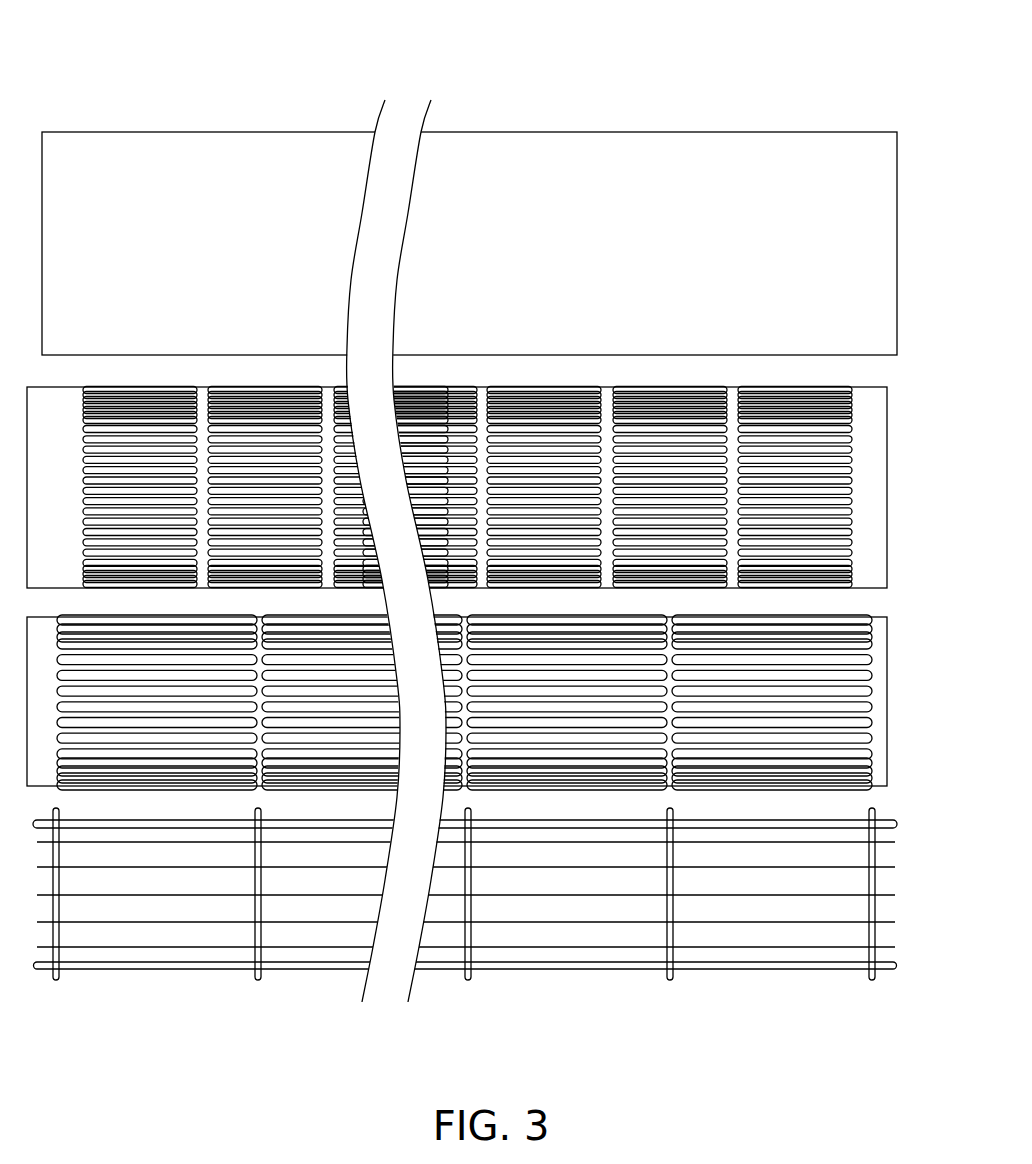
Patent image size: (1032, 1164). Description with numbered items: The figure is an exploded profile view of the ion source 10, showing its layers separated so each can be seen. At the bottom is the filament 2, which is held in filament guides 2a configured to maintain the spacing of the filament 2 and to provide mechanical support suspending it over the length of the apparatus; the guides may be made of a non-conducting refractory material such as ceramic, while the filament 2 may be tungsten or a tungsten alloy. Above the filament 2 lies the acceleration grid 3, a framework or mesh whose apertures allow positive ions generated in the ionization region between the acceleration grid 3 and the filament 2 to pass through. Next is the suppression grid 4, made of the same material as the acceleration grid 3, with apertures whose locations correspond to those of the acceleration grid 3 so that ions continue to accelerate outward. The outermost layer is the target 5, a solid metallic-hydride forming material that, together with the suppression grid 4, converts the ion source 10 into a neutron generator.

The ion source 10 is at (265, 43).
The target 5 is at (809, 157).
The suppression grid 4 is at (867, 492).
The acceleration grid 3 is at (875, 669).
The filament 2 is at (465, 922).
The filament guide 2a is at (472, 910).